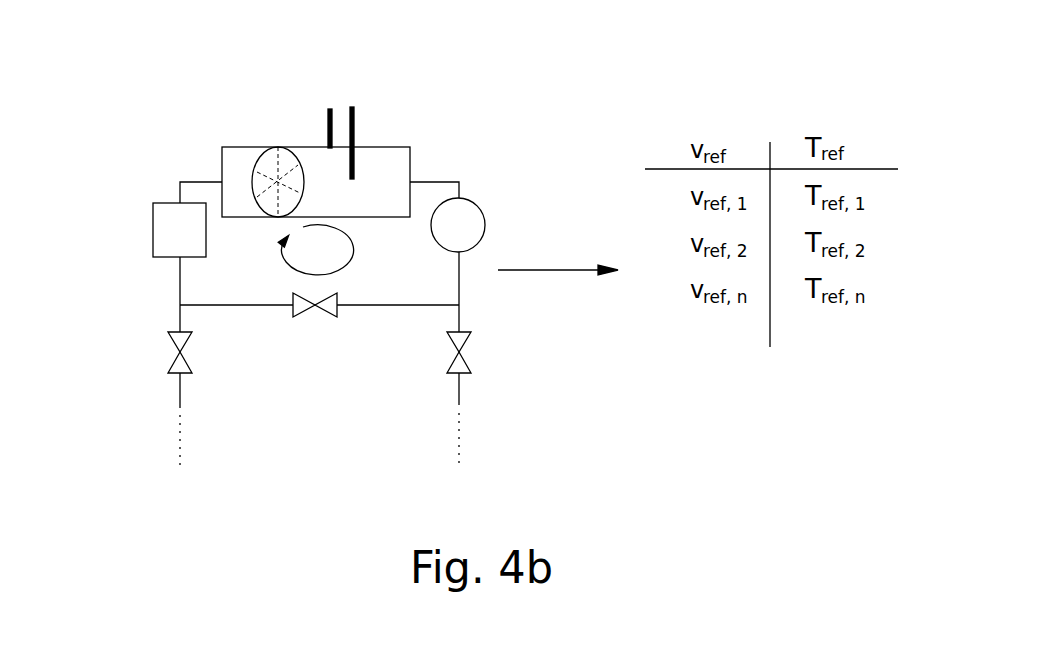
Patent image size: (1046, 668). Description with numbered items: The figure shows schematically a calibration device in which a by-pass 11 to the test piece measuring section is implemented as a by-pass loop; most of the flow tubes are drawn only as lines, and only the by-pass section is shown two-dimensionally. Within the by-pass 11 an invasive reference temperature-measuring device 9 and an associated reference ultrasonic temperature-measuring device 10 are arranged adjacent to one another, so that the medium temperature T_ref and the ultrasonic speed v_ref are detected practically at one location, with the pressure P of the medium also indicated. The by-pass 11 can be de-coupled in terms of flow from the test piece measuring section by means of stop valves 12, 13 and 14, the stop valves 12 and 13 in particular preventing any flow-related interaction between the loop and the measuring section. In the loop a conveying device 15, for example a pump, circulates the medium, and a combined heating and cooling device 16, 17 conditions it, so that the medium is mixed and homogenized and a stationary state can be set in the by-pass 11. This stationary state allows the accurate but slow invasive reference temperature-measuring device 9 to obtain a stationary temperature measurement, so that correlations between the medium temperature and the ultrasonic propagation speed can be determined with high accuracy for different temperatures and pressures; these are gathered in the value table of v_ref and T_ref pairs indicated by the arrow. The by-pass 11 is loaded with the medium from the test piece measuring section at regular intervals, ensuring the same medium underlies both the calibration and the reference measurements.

The invasive reference temperature-measuring device 9 is at (353, 137).
The reference ultrasonic temperature-measuring device 10 is at (258, 157).
The by-pass 11 is at (436, 153).
The stop valve 12 is at (173, 373).
The stop valve 13 is at (462, 363).
The stop valve 14 is at (328, 307).
The conveying device 15 is at (477, 213).
The heating device 16 is at (134, 245).
The cooling device 17 is at (163, 222).